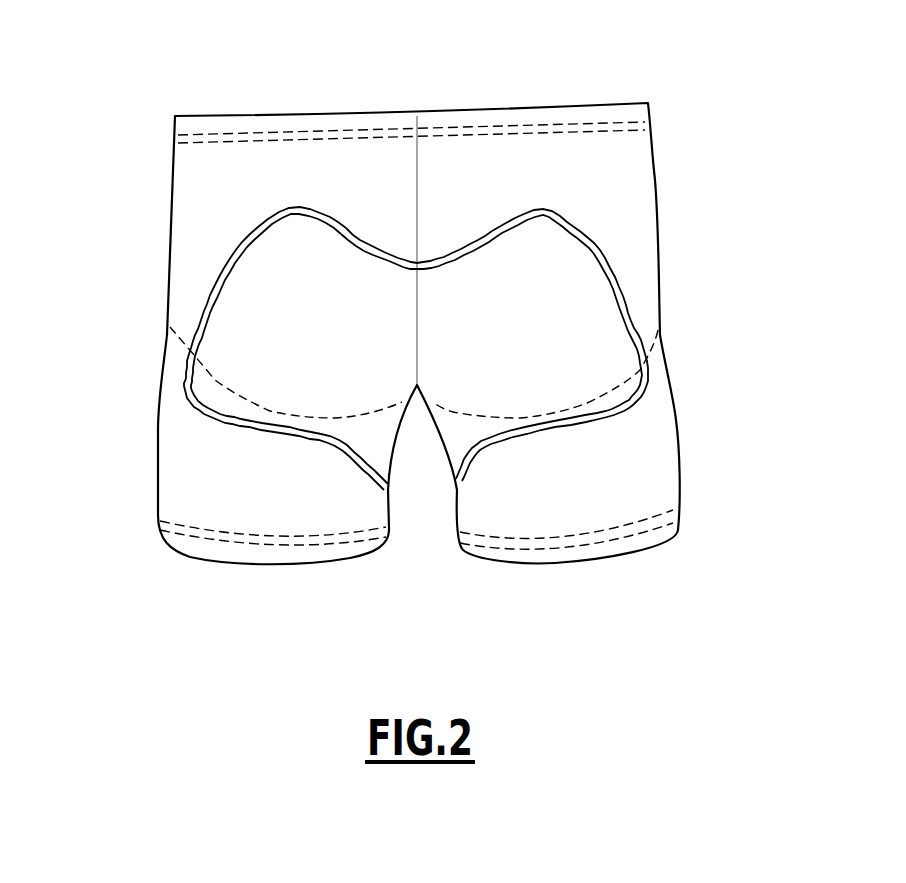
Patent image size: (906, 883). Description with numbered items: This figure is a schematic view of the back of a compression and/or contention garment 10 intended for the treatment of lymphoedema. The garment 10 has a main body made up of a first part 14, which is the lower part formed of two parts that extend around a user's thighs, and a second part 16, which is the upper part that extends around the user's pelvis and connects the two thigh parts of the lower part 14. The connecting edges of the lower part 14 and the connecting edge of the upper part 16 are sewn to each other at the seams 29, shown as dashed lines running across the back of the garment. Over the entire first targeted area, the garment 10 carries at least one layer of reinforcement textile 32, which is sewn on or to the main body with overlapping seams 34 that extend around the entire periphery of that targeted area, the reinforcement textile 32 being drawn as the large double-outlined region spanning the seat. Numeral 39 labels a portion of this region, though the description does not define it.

The compression and/or contention garment 10 is at (122, 314).
The first part 14 is at (700, 419).
The second part 16 is at (680, 178).
The seams 29 is at (628, 368).
The reinforcement textile 32 is at (482, 283).
The overlapping seams 34 is at (358, 250).
The left pad section 39 is at (285, 246).